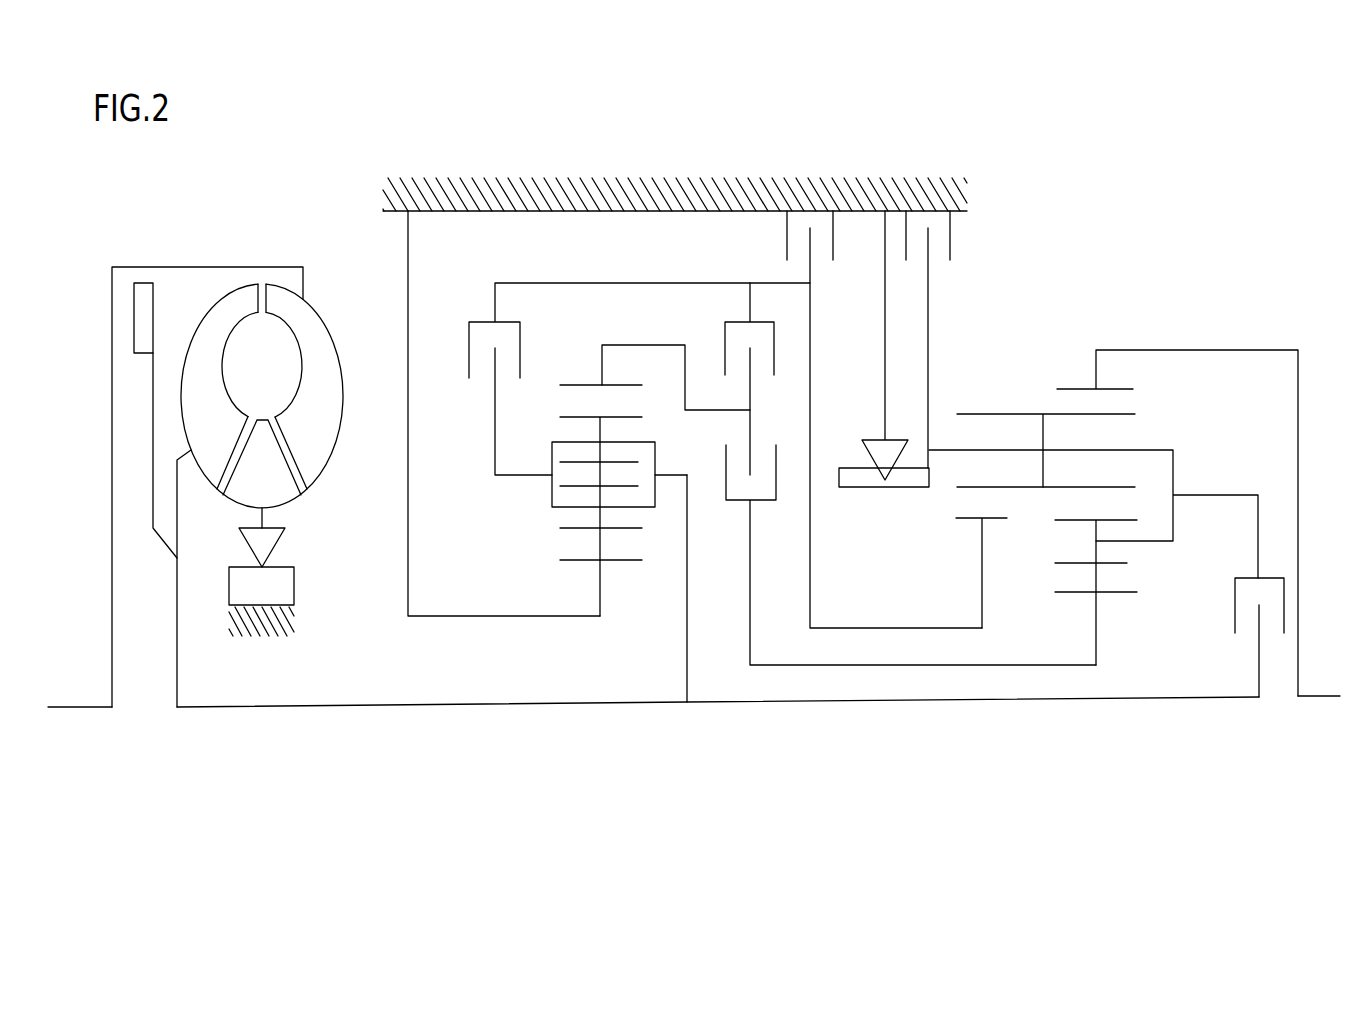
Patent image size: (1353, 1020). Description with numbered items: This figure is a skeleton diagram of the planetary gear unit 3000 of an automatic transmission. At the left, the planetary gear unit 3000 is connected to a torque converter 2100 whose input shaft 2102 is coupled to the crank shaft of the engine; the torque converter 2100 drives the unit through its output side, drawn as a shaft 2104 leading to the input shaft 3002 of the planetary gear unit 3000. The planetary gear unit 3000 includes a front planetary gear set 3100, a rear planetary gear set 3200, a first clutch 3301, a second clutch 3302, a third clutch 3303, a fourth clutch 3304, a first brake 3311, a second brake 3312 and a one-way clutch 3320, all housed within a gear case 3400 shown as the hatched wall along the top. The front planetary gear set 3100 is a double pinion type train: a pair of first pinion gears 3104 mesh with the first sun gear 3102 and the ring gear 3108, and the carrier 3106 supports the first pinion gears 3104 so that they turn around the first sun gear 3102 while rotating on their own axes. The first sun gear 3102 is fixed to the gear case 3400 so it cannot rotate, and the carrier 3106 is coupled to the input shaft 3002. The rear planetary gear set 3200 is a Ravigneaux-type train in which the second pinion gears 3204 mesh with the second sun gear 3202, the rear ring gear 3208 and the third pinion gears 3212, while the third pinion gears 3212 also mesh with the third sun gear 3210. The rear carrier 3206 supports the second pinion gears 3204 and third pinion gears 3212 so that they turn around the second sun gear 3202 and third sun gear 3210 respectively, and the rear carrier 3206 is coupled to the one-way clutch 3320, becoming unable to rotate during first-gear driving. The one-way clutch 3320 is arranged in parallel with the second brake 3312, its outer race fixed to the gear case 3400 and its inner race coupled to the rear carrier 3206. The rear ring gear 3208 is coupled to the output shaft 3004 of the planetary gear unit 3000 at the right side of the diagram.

The torque converter 2100 is at (232, 243).
The input shaft 2102 is at (80, 707).
The torque converter output shaft 2104 is at (232, 707).
The planetary gear unit 3000 is at (763, 152).
The input shaft 3002 is at (667, 701).
The output shaft 3004 is at (1322, 697).
The front planetary gear set 3100 is at (500, 480).
The first sun gear 3102 is at (618, 562).
The first pinion gears 3104 is at (613, 417).
The carrier 3106 is at (548, 482).
The ring gear 3108 is at (590, 385).
The rear planetary gear set 3200 is at (1105, 322).
The second sun gear 3202 is at (975, 518).
The second pinion gears 3204 is at (1012, 413).
The rear carrier 3206 is at (1160, 450).
The rear ring gear 3208 is at (1078, 387).
The third sun gear 3210 is at (1080, 590).
The third pinion gears 3212 is at (1125, 563).
The C1 clutch 3301 is at (762, 502).
The C2 clutch 3302 is at (1233, 615).
The C3 clutch 3303 is at (725, 340).
The C4 clutch 3304 is at (477, 320).
The B1 brake 3311 is at (785, 223).
The B2 brake 3312 is at (953, 230).
The one-way clutch 3320 is at (867, 487).
The gear case 3400 is at (598, 176).